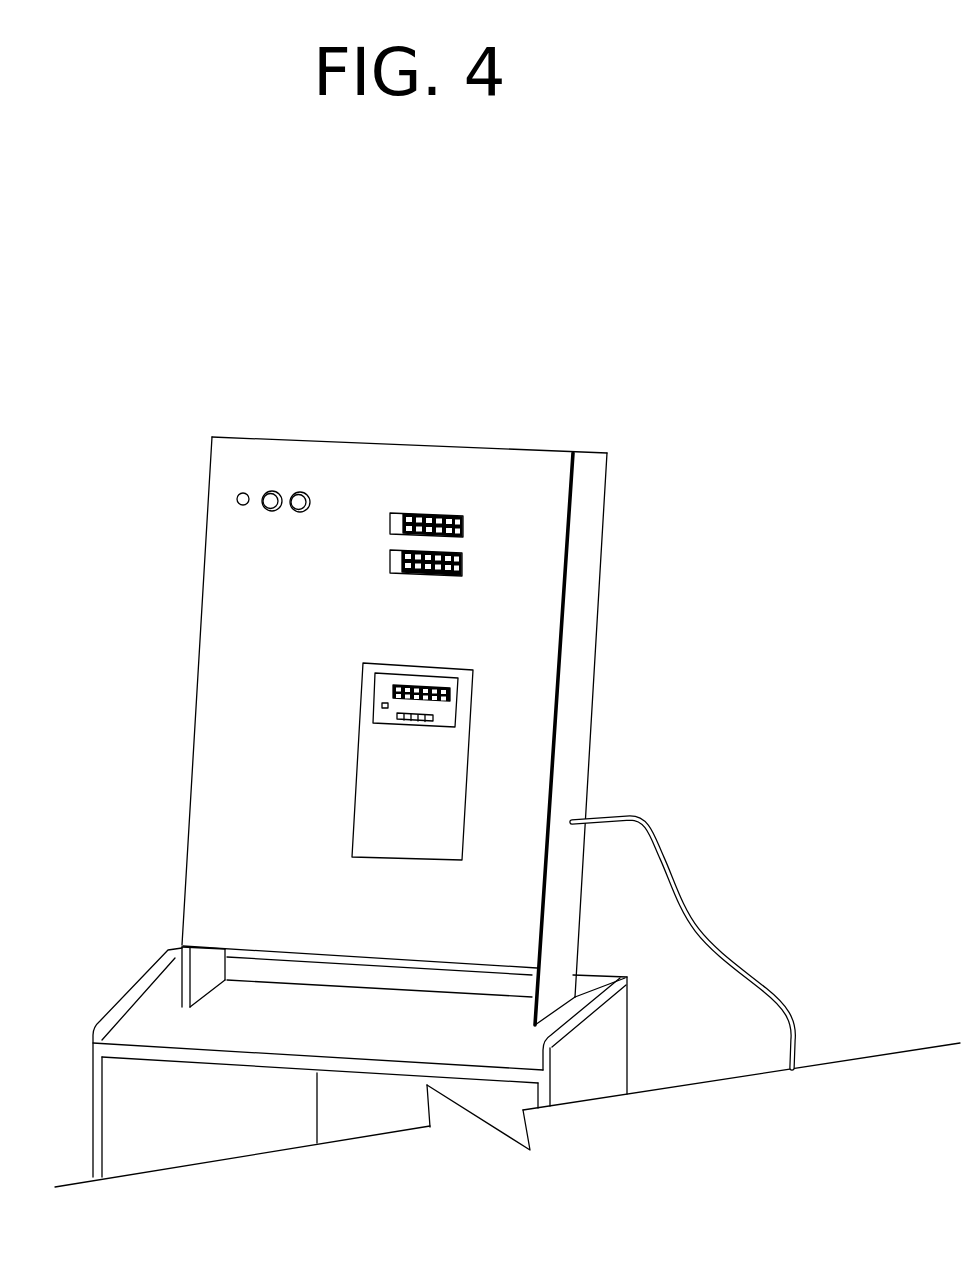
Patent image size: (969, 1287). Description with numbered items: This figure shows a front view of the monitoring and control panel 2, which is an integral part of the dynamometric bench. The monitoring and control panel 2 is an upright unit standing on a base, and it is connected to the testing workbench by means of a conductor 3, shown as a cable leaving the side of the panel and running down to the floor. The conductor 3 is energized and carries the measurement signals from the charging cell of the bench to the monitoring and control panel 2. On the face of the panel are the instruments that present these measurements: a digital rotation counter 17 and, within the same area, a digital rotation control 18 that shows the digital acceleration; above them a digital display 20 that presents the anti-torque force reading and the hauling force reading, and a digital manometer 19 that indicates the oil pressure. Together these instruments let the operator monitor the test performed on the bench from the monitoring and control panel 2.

The monitoring and control panel 2 is at (267, 836).
The conductor 3 is at (730, 960).
The digital rotation counter 17 is at (393, 688).
The digital rotation control 18 is at (433, 716).
The digital manometer 19 is at (462, 566).
The digital display 20 is at (463, 523).